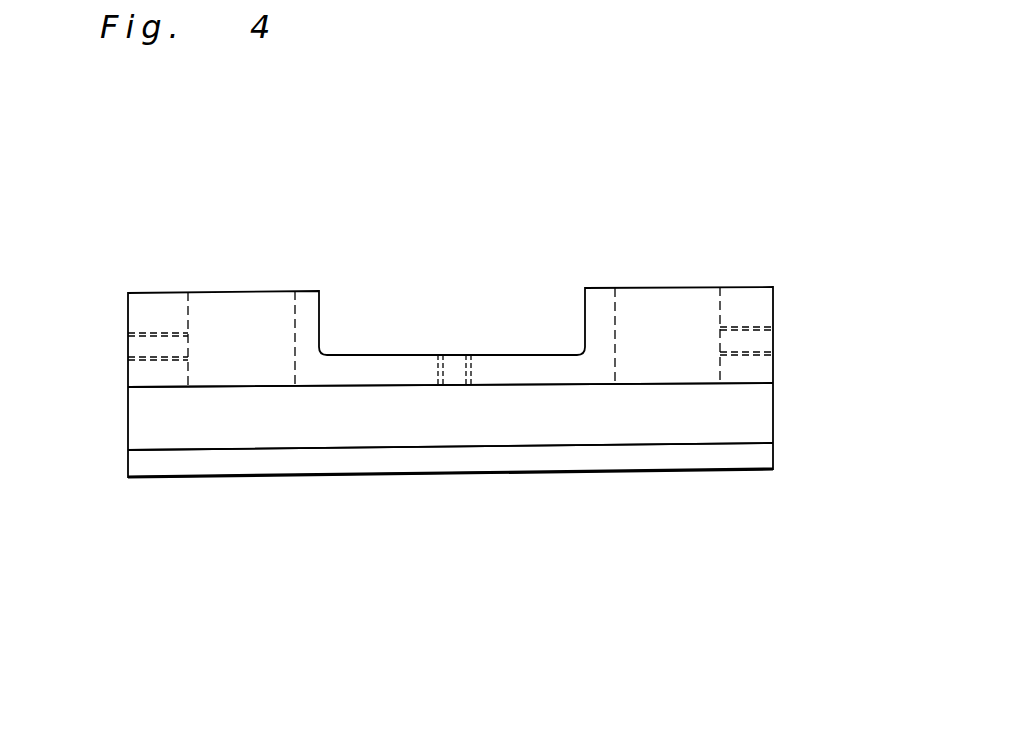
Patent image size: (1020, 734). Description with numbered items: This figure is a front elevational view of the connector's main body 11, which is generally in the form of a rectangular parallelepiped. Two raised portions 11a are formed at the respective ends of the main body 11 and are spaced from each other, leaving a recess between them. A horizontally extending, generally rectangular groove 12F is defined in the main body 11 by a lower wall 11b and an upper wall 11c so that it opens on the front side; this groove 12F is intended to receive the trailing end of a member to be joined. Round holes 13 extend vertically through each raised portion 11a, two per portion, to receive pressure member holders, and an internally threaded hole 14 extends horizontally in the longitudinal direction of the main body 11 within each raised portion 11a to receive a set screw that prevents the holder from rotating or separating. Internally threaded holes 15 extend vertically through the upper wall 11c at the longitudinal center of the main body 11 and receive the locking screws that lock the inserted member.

The main body 11 is at (318, 290).
The raised portions 11a is at (170, 388).
The lower walls 11b is at (164, 450).
The upper walls 11c is at (530, 355).
The rectangular groove 12F is at (752, 413).
The round holes 13 is at (296, 311).
The internally threaded hole 14 is at (133, 334).
The internally threaded holes 15 is at (445, 355).